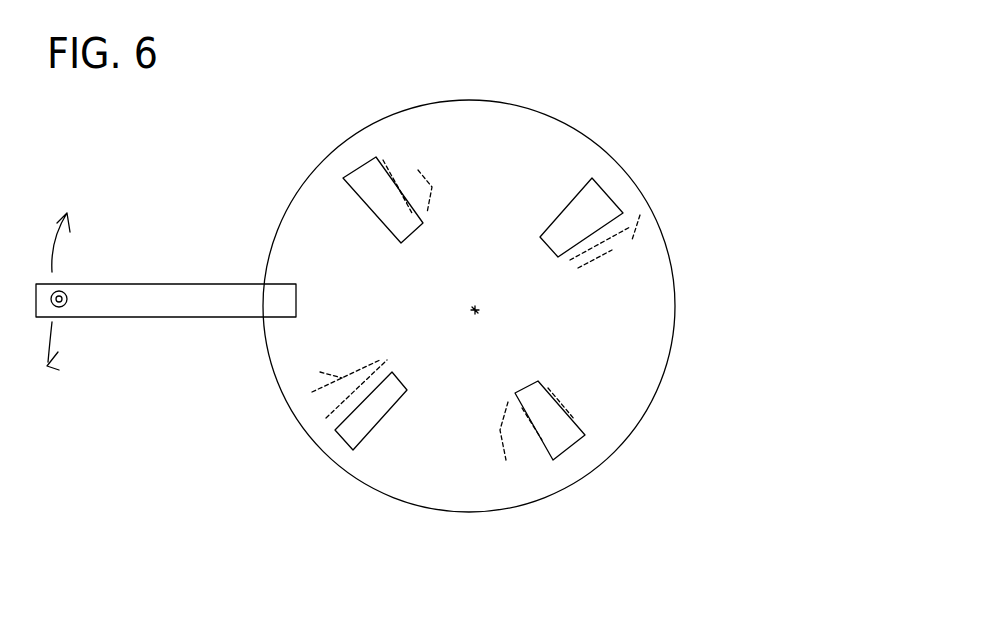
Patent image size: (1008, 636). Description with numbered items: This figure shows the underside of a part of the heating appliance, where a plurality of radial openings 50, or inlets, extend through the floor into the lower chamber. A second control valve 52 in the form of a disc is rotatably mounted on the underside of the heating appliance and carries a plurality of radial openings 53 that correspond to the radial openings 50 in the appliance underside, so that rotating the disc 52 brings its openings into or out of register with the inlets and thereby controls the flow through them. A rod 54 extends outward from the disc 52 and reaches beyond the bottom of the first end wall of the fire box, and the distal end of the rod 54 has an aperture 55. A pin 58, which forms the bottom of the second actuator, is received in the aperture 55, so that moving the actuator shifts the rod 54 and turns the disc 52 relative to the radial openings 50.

The radial openings 50 is at (430, 165).
The second control valve 52 is at (670, 363).
The radial openings 53 is at (372, 183).
The rod 54 is at (200, 290).
The aperture 55 is at (68, 299).
The pin 58 is at (70, 318).